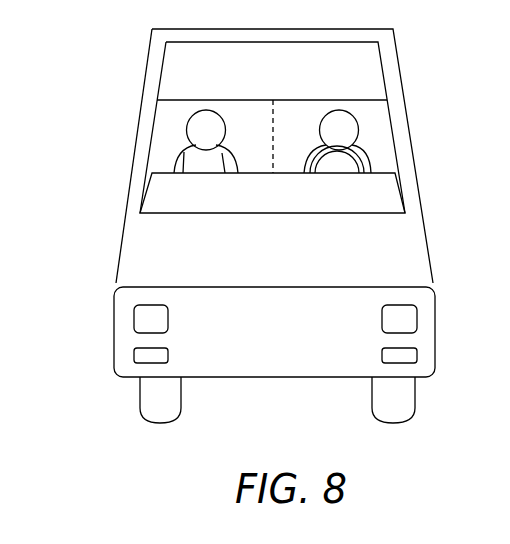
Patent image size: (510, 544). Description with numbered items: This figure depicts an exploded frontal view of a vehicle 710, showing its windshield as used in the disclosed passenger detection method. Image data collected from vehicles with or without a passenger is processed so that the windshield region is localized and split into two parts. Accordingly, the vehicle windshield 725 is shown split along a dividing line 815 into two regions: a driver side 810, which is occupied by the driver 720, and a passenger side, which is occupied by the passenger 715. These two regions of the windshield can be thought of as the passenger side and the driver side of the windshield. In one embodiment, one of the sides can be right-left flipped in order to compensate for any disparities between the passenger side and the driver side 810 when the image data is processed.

The vehicle 710 is at (113, 244).
The passenger 715 is at (182, 150).
The driver 720 is at (362, 146).
The vehicle windshield 725 is at (178, 110).
The driver side 810 is at (366, 108).
The dividing line 815 is at (273, 100).